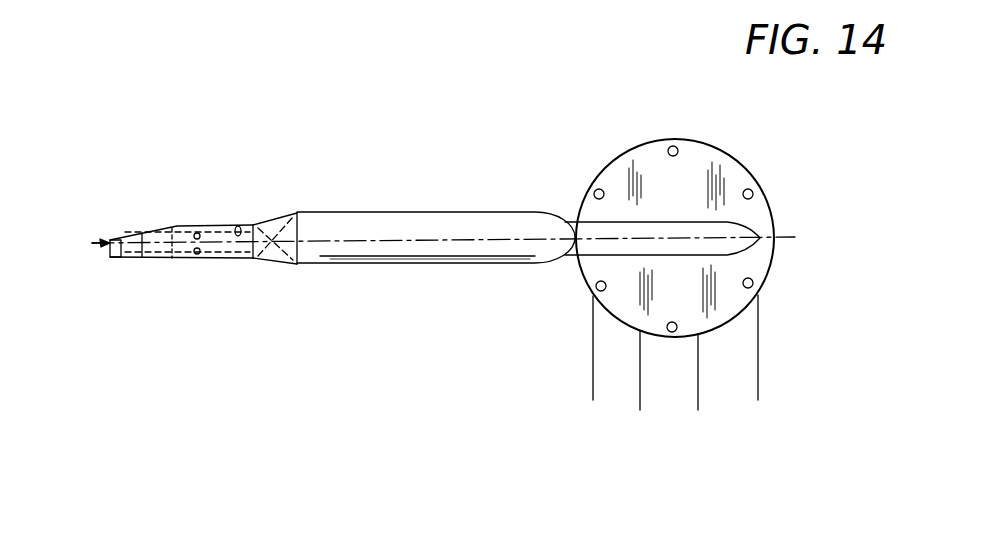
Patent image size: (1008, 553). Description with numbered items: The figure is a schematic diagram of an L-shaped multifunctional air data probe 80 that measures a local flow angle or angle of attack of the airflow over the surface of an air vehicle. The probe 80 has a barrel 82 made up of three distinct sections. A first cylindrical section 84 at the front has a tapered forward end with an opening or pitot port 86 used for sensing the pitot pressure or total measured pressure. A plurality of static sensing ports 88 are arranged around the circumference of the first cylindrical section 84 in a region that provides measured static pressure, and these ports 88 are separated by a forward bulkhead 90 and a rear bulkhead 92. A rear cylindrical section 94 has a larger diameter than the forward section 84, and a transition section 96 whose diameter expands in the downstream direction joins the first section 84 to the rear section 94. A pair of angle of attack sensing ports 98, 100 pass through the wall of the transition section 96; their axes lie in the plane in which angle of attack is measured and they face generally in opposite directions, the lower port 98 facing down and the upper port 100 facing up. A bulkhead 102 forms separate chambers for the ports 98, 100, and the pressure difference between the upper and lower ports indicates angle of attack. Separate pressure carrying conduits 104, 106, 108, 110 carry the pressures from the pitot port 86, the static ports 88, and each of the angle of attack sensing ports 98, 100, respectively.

The multifunctional air data probe 80 is at (392, 105).
The barrel 82 is at (330, 210).
The first cylindrical section 84 is at (192, 224).
The pitot port 86 is at (122, 258).
The static sensing ports 88 is at (212, 240).
The forward bulkhead 90 is at (160, 230).
The rear bulkhead 92 is at (238, 226).
The rear cylindrical section 94 is at (347, 263).
The transition section 96 is at (288, 265).
The first angle of attack sensing port 98 is at (270, 263).
The second angle of attack sensing port 100 is at (267, 224).
The bulkhead 102 is at (287, 222).
The pressure carrying conduit 104 is at (593, 355).
The pressure carrying conduit 106 is at (640, 382).
The pressure carrying conduit 108 is at (698, 402).
The pressure carrying conduit 110 is at (758, 352).